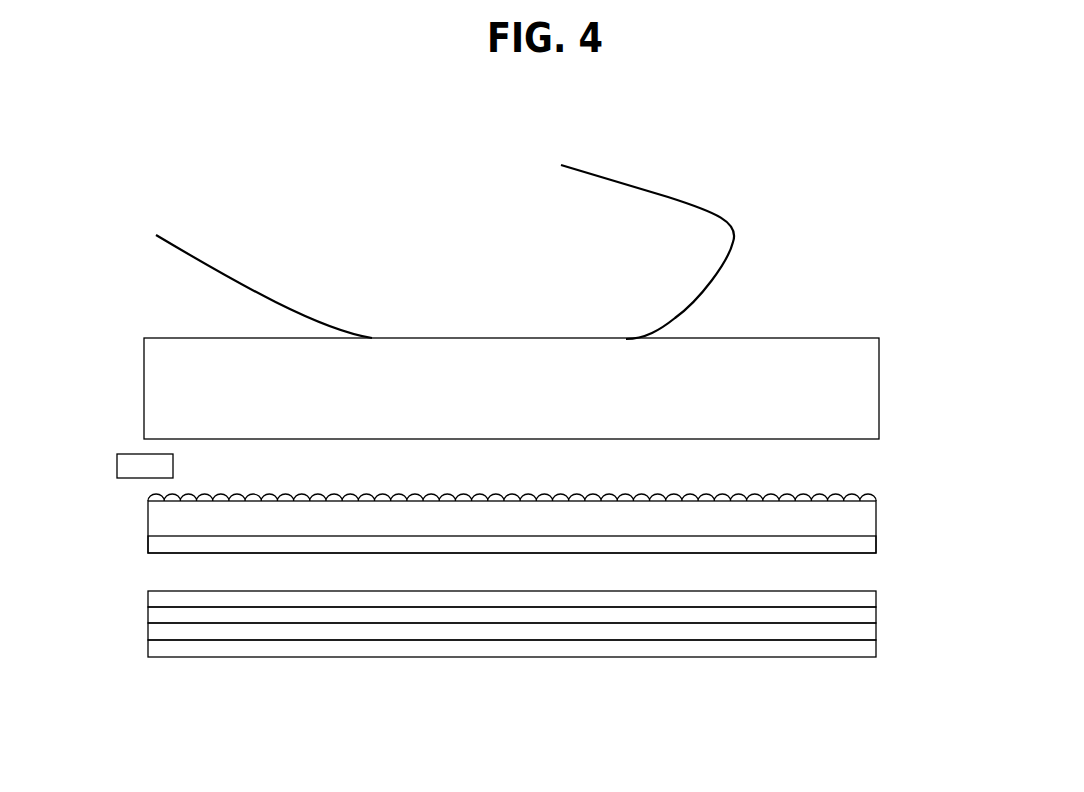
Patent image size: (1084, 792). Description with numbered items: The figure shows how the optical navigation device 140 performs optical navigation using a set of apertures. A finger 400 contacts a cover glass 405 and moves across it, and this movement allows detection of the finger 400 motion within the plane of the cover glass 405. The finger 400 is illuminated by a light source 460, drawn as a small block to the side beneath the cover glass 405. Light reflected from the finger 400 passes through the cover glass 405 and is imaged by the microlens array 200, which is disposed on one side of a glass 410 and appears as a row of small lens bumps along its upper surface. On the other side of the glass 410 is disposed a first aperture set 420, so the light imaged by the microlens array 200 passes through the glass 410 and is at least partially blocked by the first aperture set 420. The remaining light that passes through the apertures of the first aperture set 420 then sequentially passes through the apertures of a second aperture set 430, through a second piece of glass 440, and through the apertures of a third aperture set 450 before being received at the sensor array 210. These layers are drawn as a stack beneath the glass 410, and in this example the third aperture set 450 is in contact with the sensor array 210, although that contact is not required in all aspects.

The finger 400 is at (670, 197).
The optical navigation device 140 is at (778, 269).
The cover glass 405 is at (809, 338).
The light source 460 is at (130, 454).
The glass 410 is at (505, 498).
The microlens array 200 is at (840, 495).
The first aperture set 420 is at (875, 543).
The second aperture set 430 is at (876, 595).
The second piece of glass 440 is at (148, 620).
The third aperture set 450 is at (876, 630).
The sensor array 210 is at (148, 650).